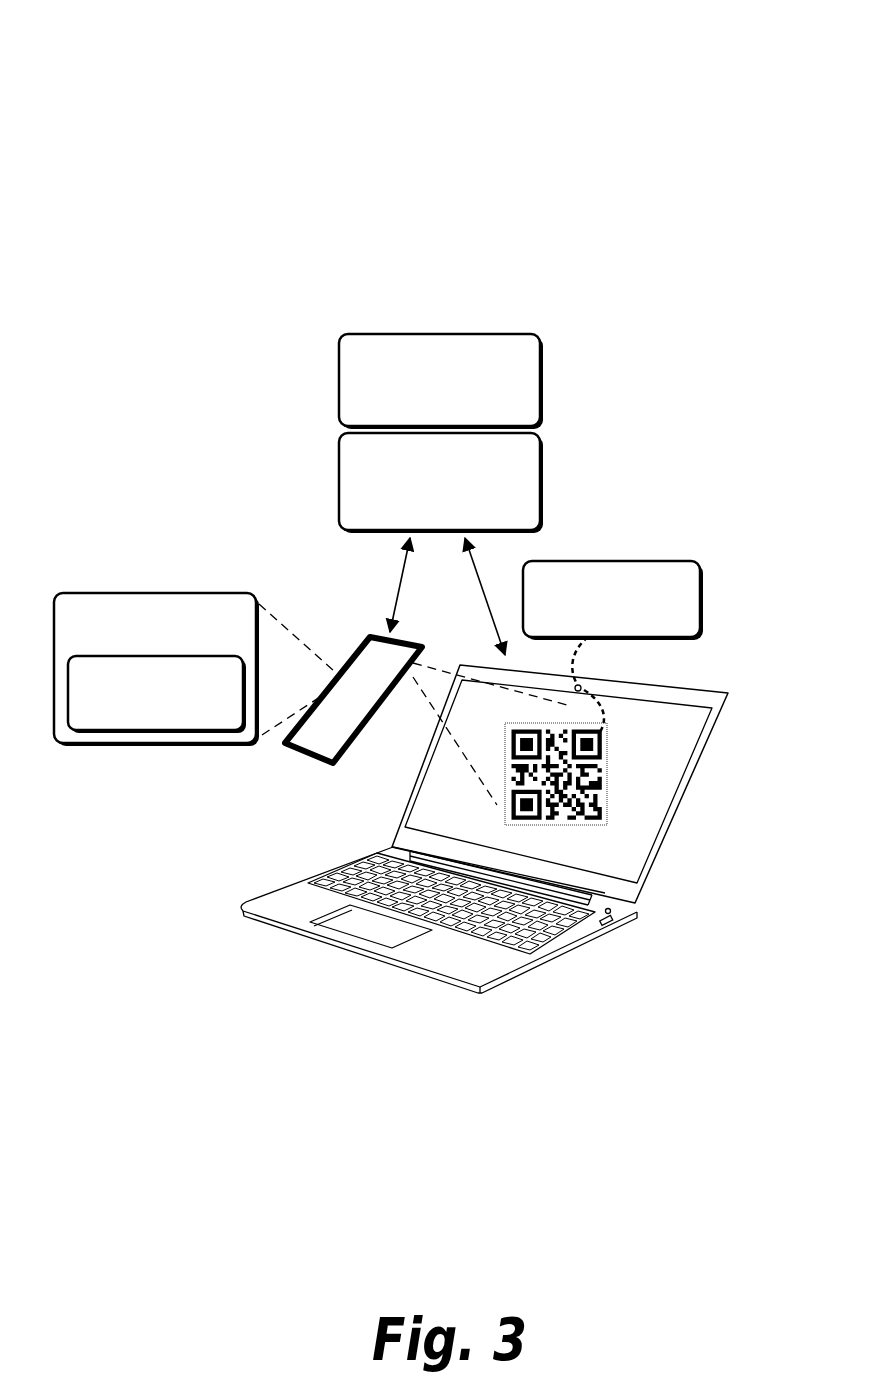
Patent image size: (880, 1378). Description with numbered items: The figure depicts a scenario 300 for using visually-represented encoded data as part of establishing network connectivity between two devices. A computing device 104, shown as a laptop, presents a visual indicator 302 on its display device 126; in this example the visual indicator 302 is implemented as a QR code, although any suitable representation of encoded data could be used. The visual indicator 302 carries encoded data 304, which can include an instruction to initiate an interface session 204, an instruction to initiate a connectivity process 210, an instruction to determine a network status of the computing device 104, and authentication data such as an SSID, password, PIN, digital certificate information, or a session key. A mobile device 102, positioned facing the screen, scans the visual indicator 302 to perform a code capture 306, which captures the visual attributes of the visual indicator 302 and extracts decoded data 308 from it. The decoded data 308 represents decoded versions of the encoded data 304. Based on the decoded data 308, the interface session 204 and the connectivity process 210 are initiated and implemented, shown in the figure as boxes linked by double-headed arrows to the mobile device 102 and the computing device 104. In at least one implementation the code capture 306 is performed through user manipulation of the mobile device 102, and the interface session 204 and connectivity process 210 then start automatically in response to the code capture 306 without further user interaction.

The scenario 300 is at (127, 62).
The interface session 204 is at (458, 405).
The connectivity process 210 is at (503, 507).
The code capture 306 is at (174, 651).
The decoded data 308 is at (174, 717).
The encoded data 304 is at (630, 622).
The mobile device 102 is at (308, 746).
The computing device 104 is at (496, 814).
The display device 126 is at (653, 818).
The visual indicator 302 is at (608, 775).